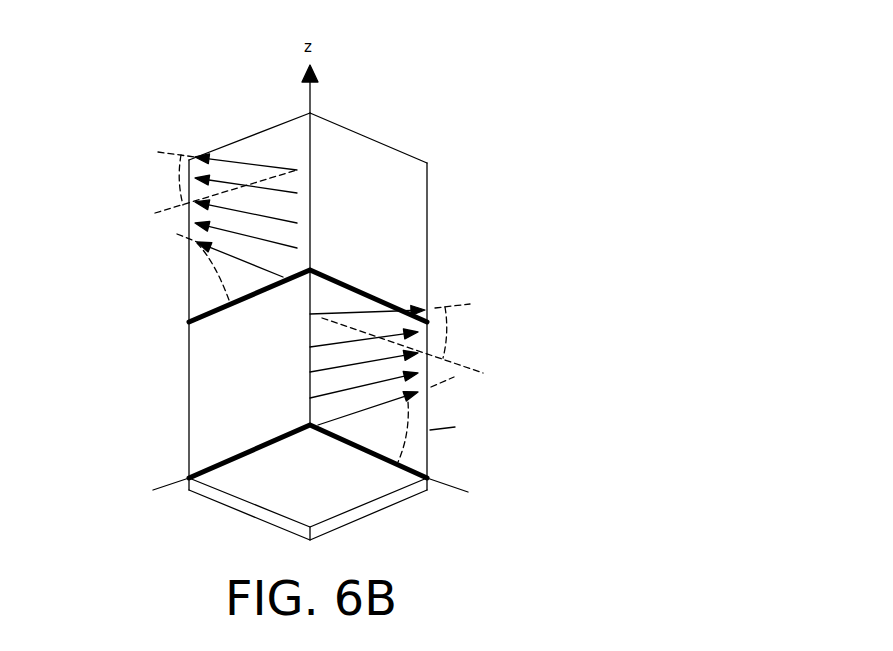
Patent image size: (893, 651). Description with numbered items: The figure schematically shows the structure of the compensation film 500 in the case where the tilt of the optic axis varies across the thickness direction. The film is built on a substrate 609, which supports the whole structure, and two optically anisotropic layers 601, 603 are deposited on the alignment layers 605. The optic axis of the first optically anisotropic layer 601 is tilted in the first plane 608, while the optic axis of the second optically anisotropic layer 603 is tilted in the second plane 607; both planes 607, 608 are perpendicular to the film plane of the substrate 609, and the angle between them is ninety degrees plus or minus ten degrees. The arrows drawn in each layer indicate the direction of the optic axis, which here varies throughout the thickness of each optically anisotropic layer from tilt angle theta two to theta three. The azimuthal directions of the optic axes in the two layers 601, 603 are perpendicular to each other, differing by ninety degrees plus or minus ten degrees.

The film 500 is at (379, 120).
The first optically anisotropic layer 601 is at (429, 415).
The second optically anisotropic layer 603 is at (200, 263).
The alignment layers 605 is at (429, 281).
The second plane 607 is at (264, 147).
The first plane 608 is at (410, 173).
The substrate 609 is at (212, 497).